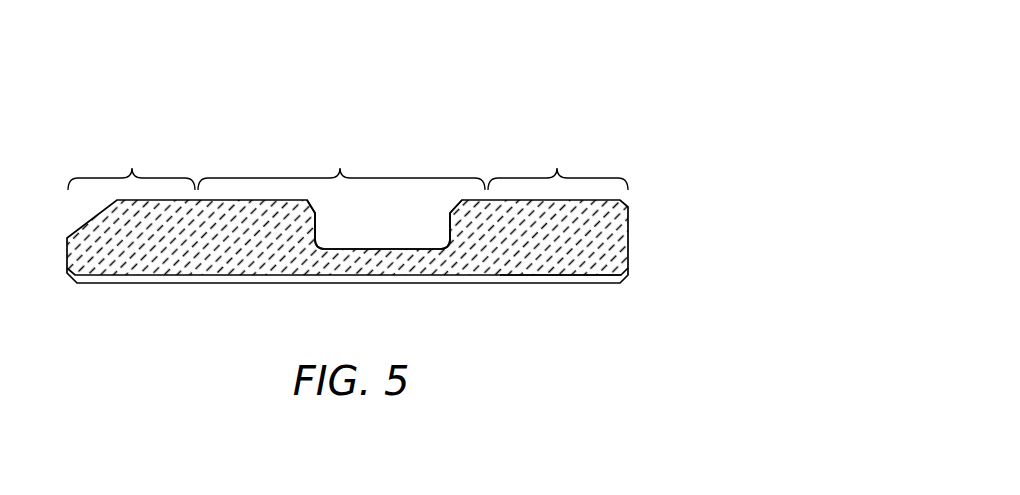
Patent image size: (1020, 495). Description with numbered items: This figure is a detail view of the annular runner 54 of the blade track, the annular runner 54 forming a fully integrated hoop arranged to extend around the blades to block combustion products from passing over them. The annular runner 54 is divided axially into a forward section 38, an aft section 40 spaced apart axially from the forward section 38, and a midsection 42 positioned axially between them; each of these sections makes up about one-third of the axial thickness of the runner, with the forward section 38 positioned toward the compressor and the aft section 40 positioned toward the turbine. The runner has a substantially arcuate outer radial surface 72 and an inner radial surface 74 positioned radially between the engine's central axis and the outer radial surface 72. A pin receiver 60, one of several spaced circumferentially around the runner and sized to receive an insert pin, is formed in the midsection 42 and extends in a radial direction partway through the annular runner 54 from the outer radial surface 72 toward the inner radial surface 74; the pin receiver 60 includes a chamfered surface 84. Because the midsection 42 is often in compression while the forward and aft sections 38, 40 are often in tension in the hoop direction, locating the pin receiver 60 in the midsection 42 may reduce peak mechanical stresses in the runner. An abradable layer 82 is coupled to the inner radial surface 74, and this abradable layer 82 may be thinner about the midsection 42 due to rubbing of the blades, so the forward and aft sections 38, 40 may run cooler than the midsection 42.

The annular runner 54 is at (624, 94).
The forward section 38 is at (131, 165).
The midsection 42 is at (341, 165).
The aft section 40 is at (558, 165).
The pin receiver 60 is at (391, 220).
The outer radial surface 72 is at (592, 200).
The inner radial surface 74 is at (563, 277).
The abradable layer 82 is at (402, 277).
The chamfered surface 84 is at (316, 206).